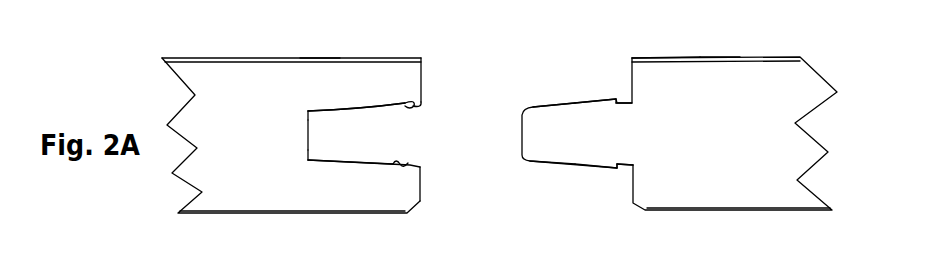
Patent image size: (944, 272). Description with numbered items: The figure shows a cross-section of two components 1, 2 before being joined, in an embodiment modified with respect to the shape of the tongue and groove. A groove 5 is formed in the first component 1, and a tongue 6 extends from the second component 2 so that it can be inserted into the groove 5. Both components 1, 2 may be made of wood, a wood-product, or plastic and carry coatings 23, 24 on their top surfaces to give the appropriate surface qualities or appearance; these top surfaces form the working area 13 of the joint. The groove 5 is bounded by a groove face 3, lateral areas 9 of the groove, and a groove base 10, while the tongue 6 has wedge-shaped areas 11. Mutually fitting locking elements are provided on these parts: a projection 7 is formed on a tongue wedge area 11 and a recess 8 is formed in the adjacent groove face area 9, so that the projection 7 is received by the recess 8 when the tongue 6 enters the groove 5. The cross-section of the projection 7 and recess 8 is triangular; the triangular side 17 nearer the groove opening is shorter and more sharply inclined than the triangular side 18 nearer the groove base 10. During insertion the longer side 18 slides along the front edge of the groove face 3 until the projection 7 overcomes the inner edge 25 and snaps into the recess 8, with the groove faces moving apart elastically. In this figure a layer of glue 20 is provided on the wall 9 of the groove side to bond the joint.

The component 1 is at (243, 80).
The component 2 is at (742, 113).
The groove face 3 is at (353, 82).
The groove 5 is at (413, 137).
The tongue 6 is at (543, 142).
The projection 7 is at (613, 97).
The recess 8 is at (422, 100).
The lateral area of the groove 9 is at (305, 112).
The groove base 10 is at (306, 136).
The wedge-shaped area of the tongue 11 is at (552, 104).
The working area 13 is at (313, 55).
The triangular side 17 is at (617, 106).
The triangular side 18 is at (598, 100).
The layer of glue 20 is at (345, 111).
The coating 23 is at (267, 62).
The coating 24 is at (662, 58).
The inner edge 25 is at (415, 103).